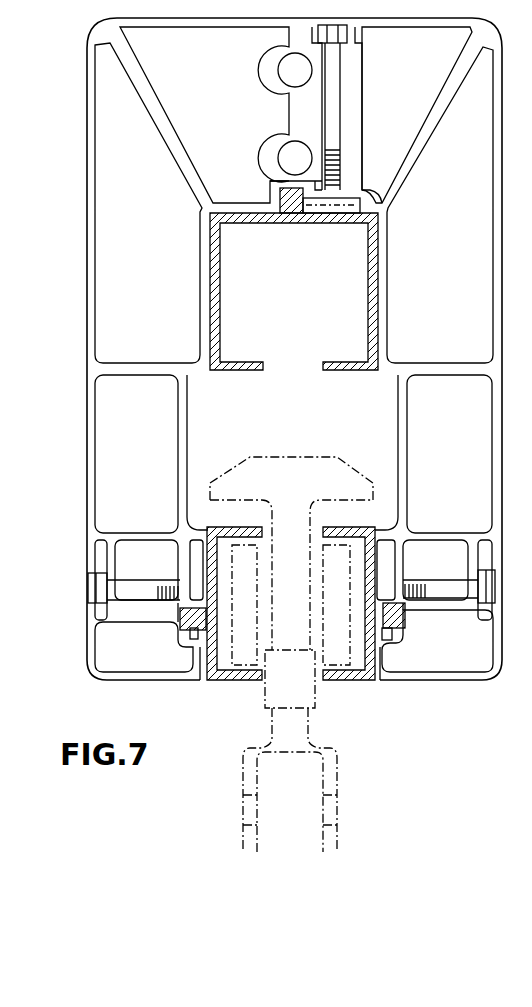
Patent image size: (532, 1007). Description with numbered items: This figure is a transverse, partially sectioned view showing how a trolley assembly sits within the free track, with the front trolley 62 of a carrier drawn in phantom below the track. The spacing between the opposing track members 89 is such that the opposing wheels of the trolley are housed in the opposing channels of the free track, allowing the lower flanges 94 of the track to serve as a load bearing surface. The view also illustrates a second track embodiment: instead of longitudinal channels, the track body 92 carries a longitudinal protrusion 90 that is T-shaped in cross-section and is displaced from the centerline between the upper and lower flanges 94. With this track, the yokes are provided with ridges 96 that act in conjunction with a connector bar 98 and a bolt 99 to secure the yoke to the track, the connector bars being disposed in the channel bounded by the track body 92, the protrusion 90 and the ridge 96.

The front trolley 62 is at (342, 834).
The track member 89 is at (238, 694).
The longitudinal protrusion 90 is at (395, 634).
The track body 92 is at (207, 645).
The flange 94 is at (223, 527).
The ridge 96 is at (378, 530).
The connector bar 98 is at (383, 568).
The bolt 99 is at (497, 583).